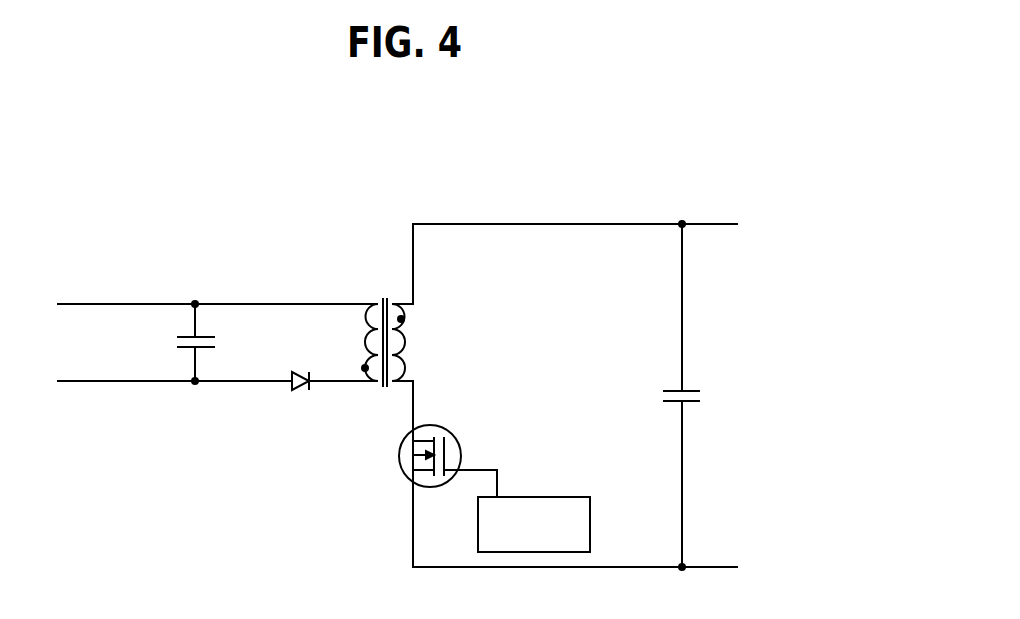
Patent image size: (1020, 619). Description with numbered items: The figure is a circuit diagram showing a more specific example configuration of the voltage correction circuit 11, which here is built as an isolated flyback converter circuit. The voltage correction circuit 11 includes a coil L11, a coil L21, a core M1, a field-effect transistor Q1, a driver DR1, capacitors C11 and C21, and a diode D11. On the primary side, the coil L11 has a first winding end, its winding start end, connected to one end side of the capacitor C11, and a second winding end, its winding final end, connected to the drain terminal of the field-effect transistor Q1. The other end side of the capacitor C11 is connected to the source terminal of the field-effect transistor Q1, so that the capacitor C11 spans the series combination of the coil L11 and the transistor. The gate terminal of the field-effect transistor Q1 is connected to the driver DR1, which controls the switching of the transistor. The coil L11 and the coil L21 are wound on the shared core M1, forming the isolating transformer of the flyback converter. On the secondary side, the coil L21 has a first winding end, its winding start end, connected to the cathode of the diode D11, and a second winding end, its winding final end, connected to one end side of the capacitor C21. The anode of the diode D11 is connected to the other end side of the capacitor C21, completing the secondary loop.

The voltage correction circuit 11 is at (273, 222).
The capacitor C21 is at (172, 342).
The diode D11 is at (299, 397).
The coil L21 is at (349, 342).
The coil L11 is at (418, 342).
The core M1 is at (383, 354).
The field-effect transistor Q1 is at (448, 449).
The driver DR1 is at (570, 495).
The capacitor C11 is at (666, 395).